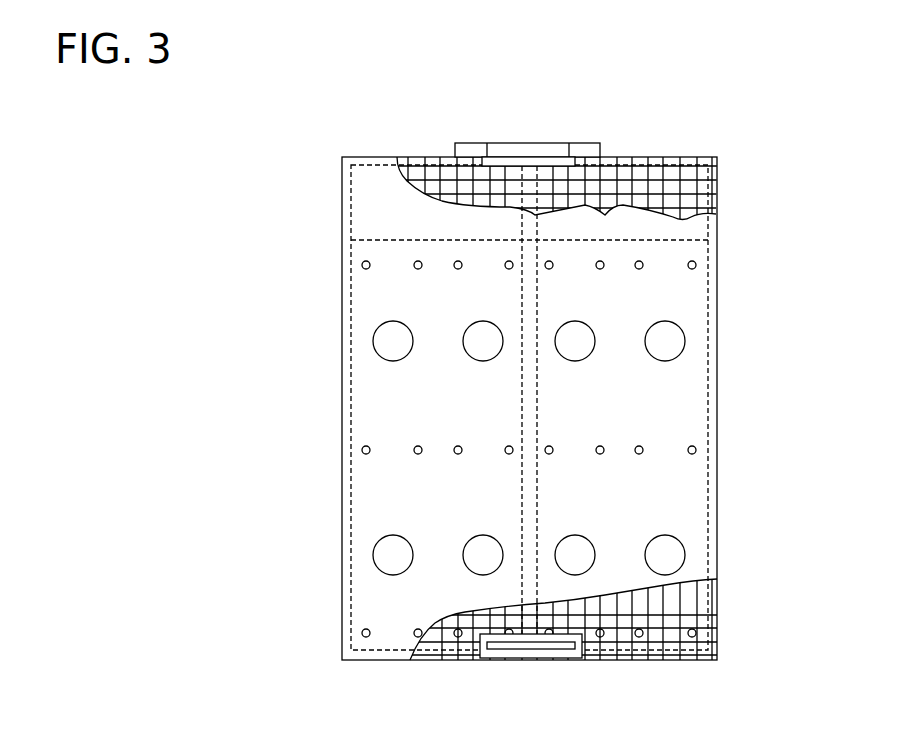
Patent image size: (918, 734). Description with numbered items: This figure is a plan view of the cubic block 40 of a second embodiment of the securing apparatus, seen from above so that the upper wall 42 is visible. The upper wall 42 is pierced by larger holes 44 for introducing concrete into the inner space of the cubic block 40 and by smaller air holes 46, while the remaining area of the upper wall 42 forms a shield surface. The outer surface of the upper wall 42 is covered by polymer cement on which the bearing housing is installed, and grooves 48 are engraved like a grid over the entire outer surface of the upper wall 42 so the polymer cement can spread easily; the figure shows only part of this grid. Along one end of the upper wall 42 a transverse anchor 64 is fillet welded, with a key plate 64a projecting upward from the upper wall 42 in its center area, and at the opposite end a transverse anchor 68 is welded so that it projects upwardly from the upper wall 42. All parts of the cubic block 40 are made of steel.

The cubic block 40 is at (326, 433).
The upper wall 42 is at (692, 417).
The holes 44 is at (674, 339).
The air holes 46 is at (696, 450).
The grooves 48 is at (697, 621).
The transverse anchor 64 is at (469, 142).
The key plate 64a is at (516, 158).
The transverse anchor 68 is at (548, 661).